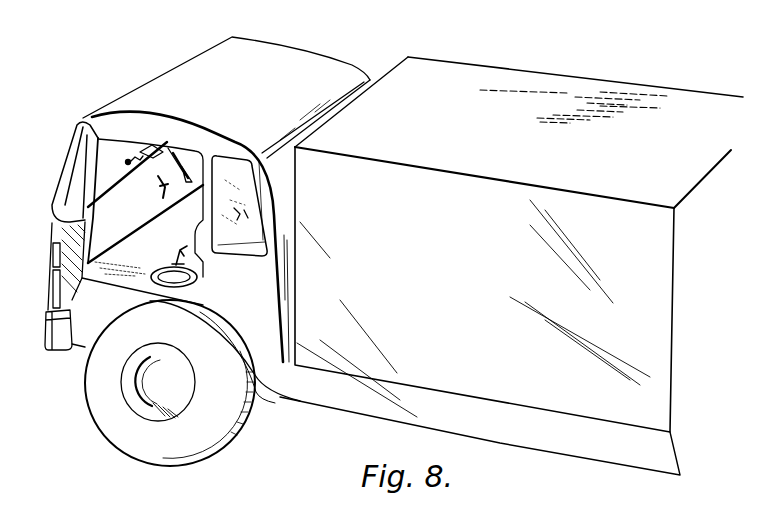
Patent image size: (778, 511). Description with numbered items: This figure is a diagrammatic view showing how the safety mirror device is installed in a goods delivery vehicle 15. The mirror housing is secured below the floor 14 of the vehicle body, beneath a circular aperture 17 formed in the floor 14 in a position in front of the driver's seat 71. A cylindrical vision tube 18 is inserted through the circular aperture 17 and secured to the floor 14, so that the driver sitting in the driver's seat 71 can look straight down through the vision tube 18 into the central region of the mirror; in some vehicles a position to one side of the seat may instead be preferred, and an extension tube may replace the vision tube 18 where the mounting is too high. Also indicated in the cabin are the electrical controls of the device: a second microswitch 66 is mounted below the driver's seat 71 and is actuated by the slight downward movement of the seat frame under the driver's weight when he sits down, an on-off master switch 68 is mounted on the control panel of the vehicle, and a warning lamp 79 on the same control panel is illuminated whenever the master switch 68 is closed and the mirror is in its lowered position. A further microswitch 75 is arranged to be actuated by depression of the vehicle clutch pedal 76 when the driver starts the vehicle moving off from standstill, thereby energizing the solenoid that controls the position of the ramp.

The floor 14 is at (130, 280).
The goods delivery vehicle 15 is at (500, 64).
The circular aperture 17 is at (170, 281).
The cylindrical vision tube 18 is at (198, 278).
The second microswitch 66 is at (243, 214).
The on-off master switch 68 is at (128, 163).
The driver's seat 71 is at (237, 202).
The microswitch 75 is at (157, 186).
The vehicle clutch pedal 76 is at (143, 220).
The warning lamp 79 is at (135, 153).